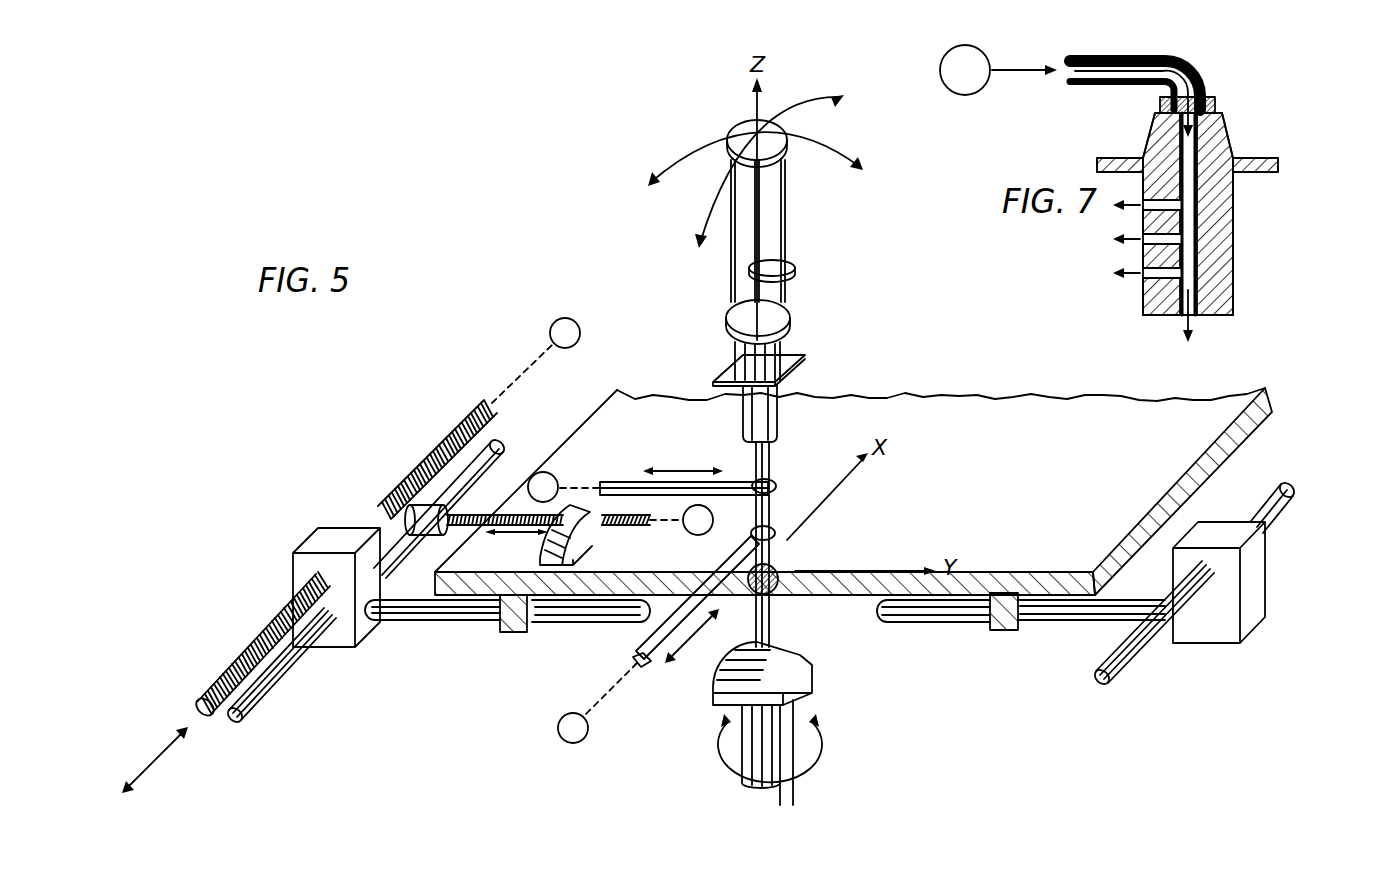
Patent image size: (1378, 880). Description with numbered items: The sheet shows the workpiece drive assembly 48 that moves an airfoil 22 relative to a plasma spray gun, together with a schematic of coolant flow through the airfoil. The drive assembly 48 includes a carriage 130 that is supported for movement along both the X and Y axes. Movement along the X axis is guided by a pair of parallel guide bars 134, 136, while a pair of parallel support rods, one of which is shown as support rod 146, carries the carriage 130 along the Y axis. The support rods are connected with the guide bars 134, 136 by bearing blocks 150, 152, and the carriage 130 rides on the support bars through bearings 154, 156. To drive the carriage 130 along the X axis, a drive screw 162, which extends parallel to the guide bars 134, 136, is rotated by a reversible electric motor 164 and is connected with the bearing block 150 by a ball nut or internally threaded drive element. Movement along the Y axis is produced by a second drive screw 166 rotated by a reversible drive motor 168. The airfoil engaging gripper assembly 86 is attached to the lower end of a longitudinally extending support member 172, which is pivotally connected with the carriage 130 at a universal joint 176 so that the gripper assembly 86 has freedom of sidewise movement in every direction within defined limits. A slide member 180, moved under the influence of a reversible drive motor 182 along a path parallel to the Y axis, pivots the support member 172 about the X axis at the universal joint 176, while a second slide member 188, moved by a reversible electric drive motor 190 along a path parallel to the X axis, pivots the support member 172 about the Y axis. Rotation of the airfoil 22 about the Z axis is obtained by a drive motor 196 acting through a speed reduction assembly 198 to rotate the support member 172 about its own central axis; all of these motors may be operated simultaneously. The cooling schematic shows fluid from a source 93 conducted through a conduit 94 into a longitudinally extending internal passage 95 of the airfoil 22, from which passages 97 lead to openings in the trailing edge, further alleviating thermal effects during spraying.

In FIG. 5, the airfoil 22 is at (793, 790).
In FIG. 7, the airfoil 22 is at (1262, 213).
In FIG. 5, the workpiece drive assembly 48 is at (377, 490).
In FIG. 5, the airfoil engaging gripper assembly 86 is at (810, 648).
In FIG. 7, the source 93 is at (993, 18).
In FIG. 7, the conduit 94 is at (1190, 54).
In FIG. 7, the internal passage 95 is at (1196, 245).
In FIG. 7, the passages 97 is at (1134, 268).
In FIG. 5, the carriage 130 is at (1038, 413).
In FIG. 5, the guide bar 134 is at (253, 698).
In FIG. 5, the guide bar 136 is at (1137, 660).
In FIG. 5, the support rod 146 is at (427, 620).
In FIG. 5, the bearing block 150 is at (340, 647).
In FIG. 5, the bearing block 152 is at (1213, 628).
In FIG. 5, the bearing 154 is at (515, 632).
In FIG. 5, the bearing 156 is at (1005, 630).
In FIG. 5, the drive screw 162 is at (210, 697).
In FIG. 5, the reversible electric motor 164 is at (552, 333).
In FIG. 5, the drive screw 166 is at (485, 513).
In FIG. 5, the reversible drive motor 168 is at (683, 537).
In FIG. 5, the support member 172 is at (772, 613).
In FIG. 5, the universal joint 176 is at (777, 558).
In FIG. 5, the slide member 180 is at (628, 483).
In FIG. 5, the reversible drive motor 182 is at (557, 477).
In FIG. 5, the second slide member 188 is at (657, 640).
In FIG. 5, the reversible electric drive motor 190 is at (577, 743).
In FIG. 5, the drive motor 196 is at (782, 347).
In FIG. 5, the speed reduction assembly 198 is at (768, 420).